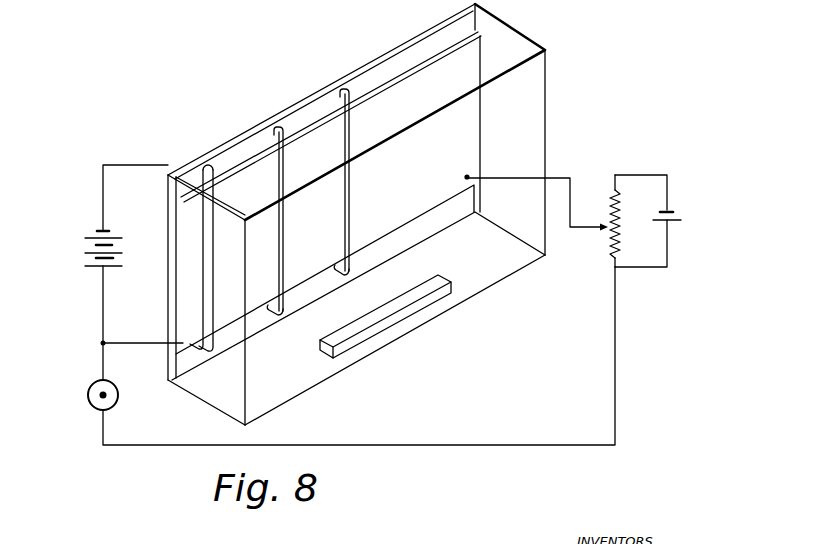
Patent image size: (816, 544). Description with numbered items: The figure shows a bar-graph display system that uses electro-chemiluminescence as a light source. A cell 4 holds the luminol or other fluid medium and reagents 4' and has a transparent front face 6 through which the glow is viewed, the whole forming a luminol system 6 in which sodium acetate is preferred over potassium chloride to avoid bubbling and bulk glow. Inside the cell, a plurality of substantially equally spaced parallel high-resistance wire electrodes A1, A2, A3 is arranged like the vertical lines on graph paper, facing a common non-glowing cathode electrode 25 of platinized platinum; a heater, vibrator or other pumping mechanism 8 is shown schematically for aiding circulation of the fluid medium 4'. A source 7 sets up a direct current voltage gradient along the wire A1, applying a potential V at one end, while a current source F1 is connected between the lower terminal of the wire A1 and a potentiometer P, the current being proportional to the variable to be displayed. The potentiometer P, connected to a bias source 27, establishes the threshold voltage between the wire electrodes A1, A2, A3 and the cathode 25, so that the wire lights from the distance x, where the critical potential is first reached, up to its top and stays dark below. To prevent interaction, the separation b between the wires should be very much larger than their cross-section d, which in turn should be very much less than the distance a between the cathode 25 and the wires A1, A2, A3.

The cell 4 is at (375, 214).
The fluid medium and reagents 4' is at (548, 150).
The common non-glowing cathode electrode 25 is at (460, 142).
The transparent front face 6 is at (497, 263).
The pumping mechanism 8 is at (393, 322).
The power source 7 is at (85, 243).
The bias source 27 is at (658, 222).
The potentiometer P is at (602, 221).
The potential V is at (142, 334).
The current source F1 is at (118, 395).
The wire electrode A1 is at (218, 194).
The wire electrode A2 is at (288, 167).
The wire electrode A3 is at (352, 137).
The distance between cathode and wires a is at (213, 228).
The separation between wires b is at (217, 241).
The cross-section of wires d is at (193, 297).
The distance from lower end to critical potential x is at (190, 318).